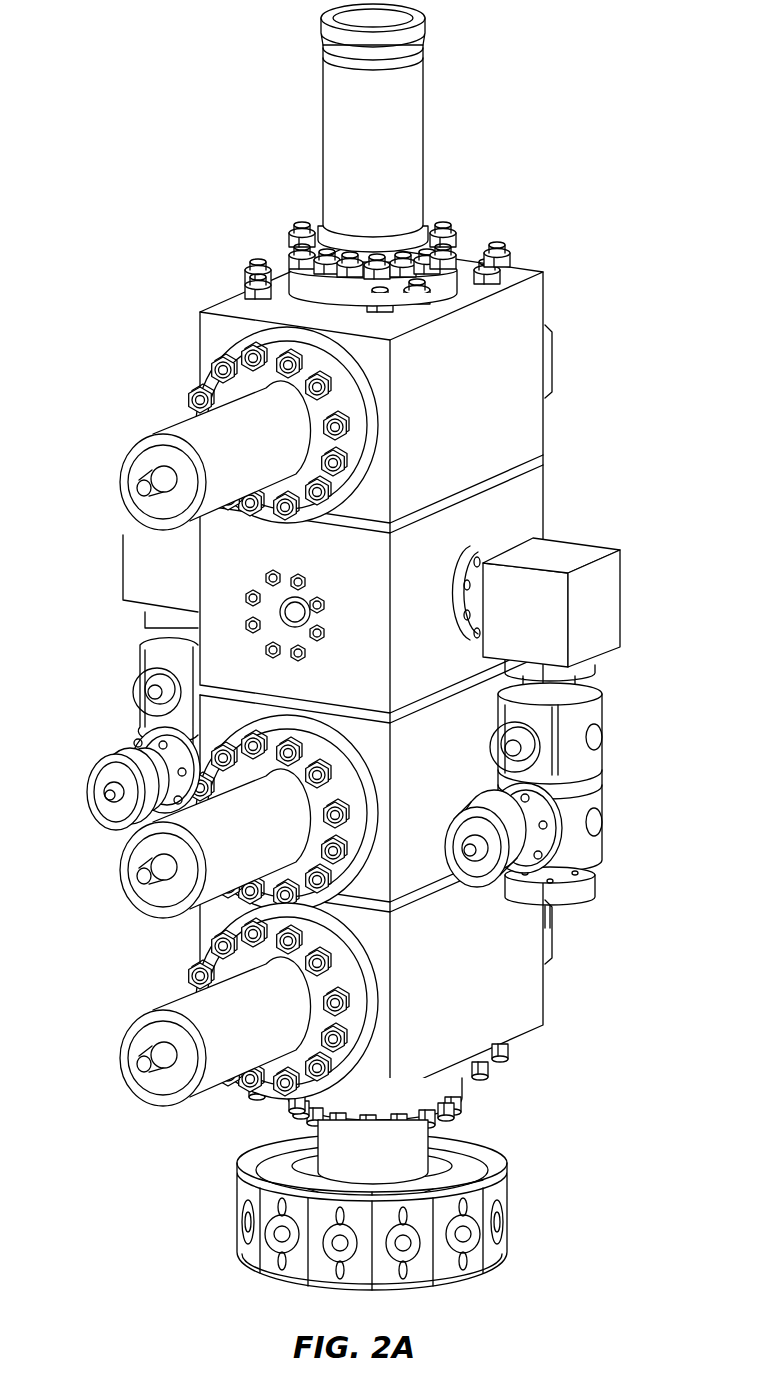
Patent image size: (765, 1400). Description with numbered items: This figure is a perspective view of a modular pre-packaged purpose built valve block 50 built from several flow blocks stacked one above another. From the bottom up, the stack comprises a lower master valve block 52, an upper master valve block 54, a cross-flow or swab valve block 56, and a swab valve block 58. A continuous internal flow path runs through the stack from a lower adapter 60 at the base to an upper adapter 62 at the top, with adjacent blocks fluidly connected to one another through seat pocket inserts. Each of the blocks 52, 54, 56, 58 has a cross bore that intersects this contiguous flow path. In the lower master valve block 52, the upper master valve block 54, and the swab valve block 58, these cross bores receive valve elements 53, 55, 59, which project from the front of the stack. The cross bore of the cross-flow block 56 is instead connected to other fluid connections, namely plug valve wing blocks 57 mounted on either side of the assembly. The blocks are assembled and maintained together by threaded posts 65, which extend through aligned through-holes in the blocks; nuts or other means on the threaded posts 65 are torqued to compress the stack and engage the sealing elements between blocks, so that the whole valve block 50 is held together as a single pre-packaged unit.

The modular pre-packaged purpose built valve block 50 is at (334, 583).
The lower master valve block 52 is at (546, 988).
The valve element 53 is at (174, 991).
The upper master valve block 54 is at (227, 728).
The valve element 55 is at (152, 906).
The cross-flow or swab valve block 56 is at (546, 503).
The plug valve wing blocks 57 is at (123, 552).
The swab valve block 58 is at (546, 404).
The valve element 59 is at (170, 424).
The lower adapter 60 is at (506, 1210).
The upper adapter 62 is at (427, 135).
The threaded posts 65 is at (509, 258).